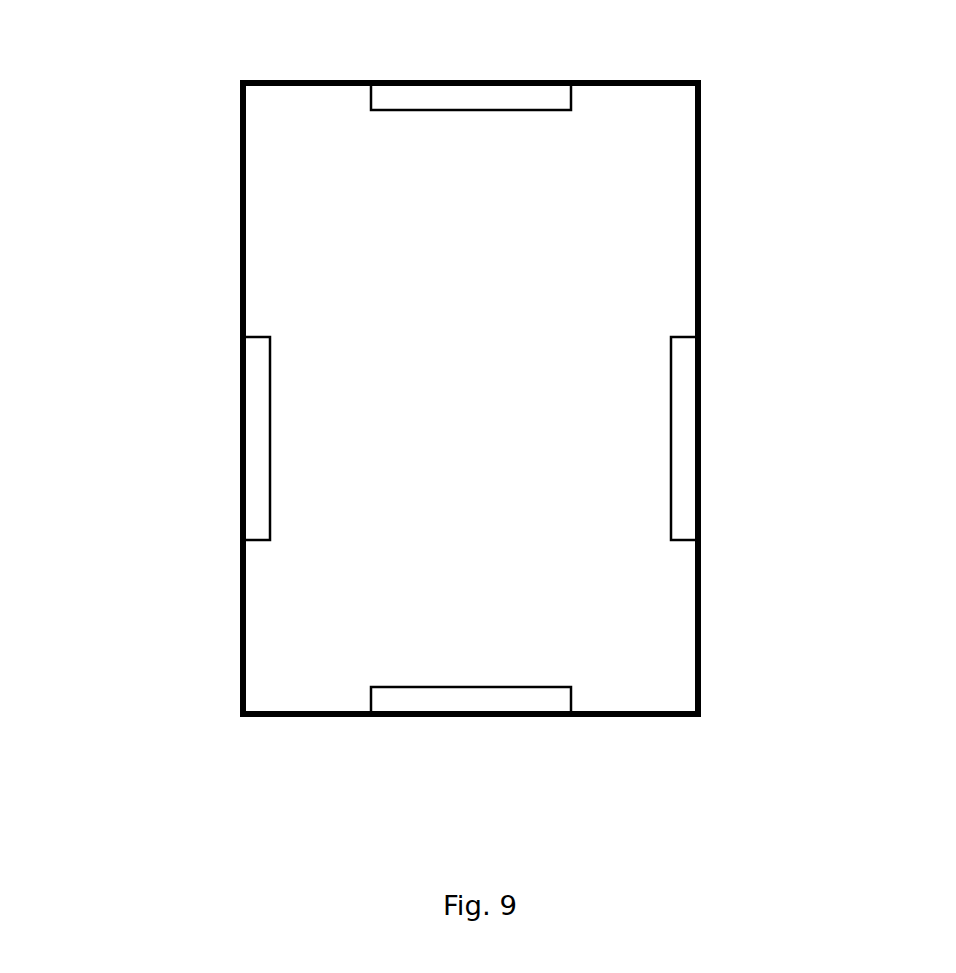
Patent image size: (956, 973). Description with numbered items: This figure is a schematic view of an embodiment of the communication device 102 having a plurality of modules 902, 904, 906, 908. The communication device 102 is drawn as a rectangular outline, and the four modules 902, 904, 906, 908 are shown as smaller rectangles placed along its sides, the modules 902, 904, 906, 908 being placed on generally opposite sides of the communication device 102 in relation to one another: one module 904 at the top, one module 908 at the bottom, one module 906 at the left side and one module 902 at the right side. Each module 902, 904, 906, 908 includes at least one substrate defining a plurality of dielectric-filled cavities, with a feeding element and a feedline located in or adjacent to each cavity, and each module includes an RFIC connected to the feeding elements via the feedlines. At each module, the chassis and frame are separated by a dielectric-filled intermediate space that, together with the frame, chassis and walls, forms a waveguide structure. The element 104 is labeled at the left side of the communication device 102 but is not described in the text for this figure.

The communication device 102 is at (209, 75).
The housing side wall 104 is at (228, 569).
The module 902 is at (697, 496).
The module 904 is at (433, 104).
The module 906 is at (269, 467).
The module 908 is at (488, 708).